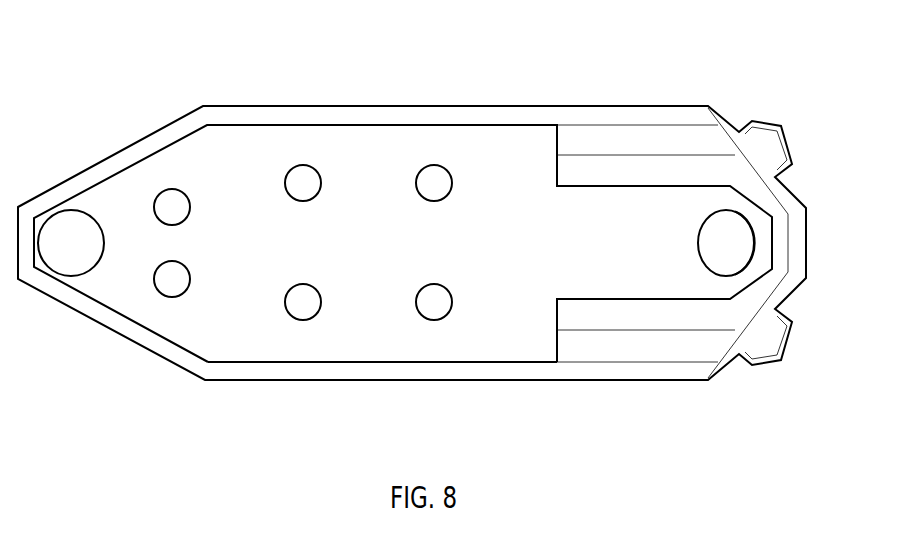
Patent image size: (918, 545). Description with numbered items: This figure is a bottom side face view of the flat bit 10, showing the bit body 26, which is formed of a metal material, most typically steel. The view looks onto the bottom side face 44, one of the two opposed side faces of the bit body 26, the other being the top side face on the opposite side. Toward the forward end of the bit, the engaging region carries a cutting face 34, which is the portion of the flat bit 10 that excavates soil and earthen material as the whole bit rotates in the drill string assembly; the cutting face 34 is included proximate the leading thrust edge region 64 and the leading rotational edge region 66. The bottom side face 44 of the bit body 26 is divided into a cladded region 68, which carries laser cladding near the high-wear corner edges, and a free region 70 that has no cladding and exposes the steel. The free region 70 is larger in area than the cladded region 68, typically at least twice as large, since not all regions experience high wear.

The flat bit 10 is at (436, 257).
The bit body 26 is at (266, 362).
The cutting face 34 is at (812, 315).
The bottom side face 44 is at (372, 125).
The leading thrust edge region 64 is at (822, 222).
The leading rotational edge region 66 is at (647, 93).
The cladded region 68 is at (573, 172).
The free region 70 is at (395, 362).